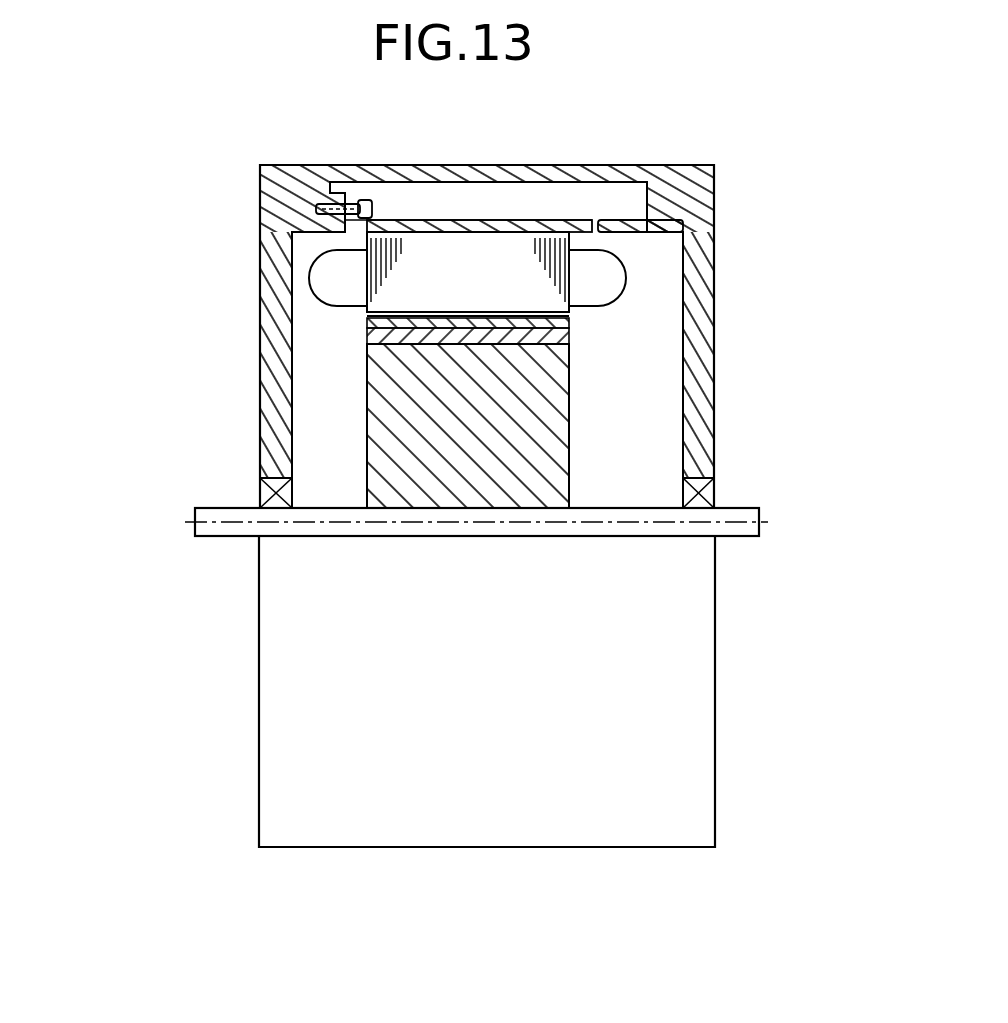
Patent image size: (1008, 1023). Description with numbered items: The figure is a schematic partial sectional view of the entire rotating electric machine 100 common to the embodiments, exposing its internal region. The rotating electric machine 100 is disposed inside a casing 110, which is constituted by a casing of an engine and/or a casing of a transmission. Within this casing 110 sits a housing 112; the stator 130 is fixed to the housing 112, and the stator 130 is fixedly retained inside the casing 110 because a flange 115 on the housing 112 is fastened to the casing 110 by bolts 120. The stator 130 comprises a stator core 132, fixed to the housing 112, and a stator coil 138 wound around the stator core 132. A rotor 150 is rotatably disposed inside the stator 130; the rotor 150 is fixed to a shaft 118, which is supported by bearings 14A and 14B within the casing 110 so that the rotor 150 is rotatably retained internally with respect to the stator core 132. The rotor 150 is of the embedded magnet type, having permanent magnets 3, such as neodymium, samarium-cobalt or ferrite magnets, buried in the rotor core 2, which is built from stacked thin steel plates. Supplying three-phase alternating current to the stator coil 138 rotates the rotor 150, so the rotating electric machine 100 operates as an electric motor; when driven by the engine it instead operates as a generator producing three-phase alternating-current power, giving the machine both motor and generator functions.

The rotor core 2 is at (382, 453).
The permanent magnet 3 is at (557, 337).
The rotating electric machine 100 is at (577, 213).
The casing 110 is at (275, 263).
The housing 112 is at (460, 221).
The flange 115 is at (352, 202).
The shaft 118 is at (217, 528).
The bolt 120 is at (324, 200).
The stator 130 is at (633, 278).
The stator core 132 is at (395, 300).
The stator coil 138 is at (330, 278).
The rotor 150 is at (580, 402).
The bearing 14A is at (262, 493).
The bearing 14B is at (712, 490).